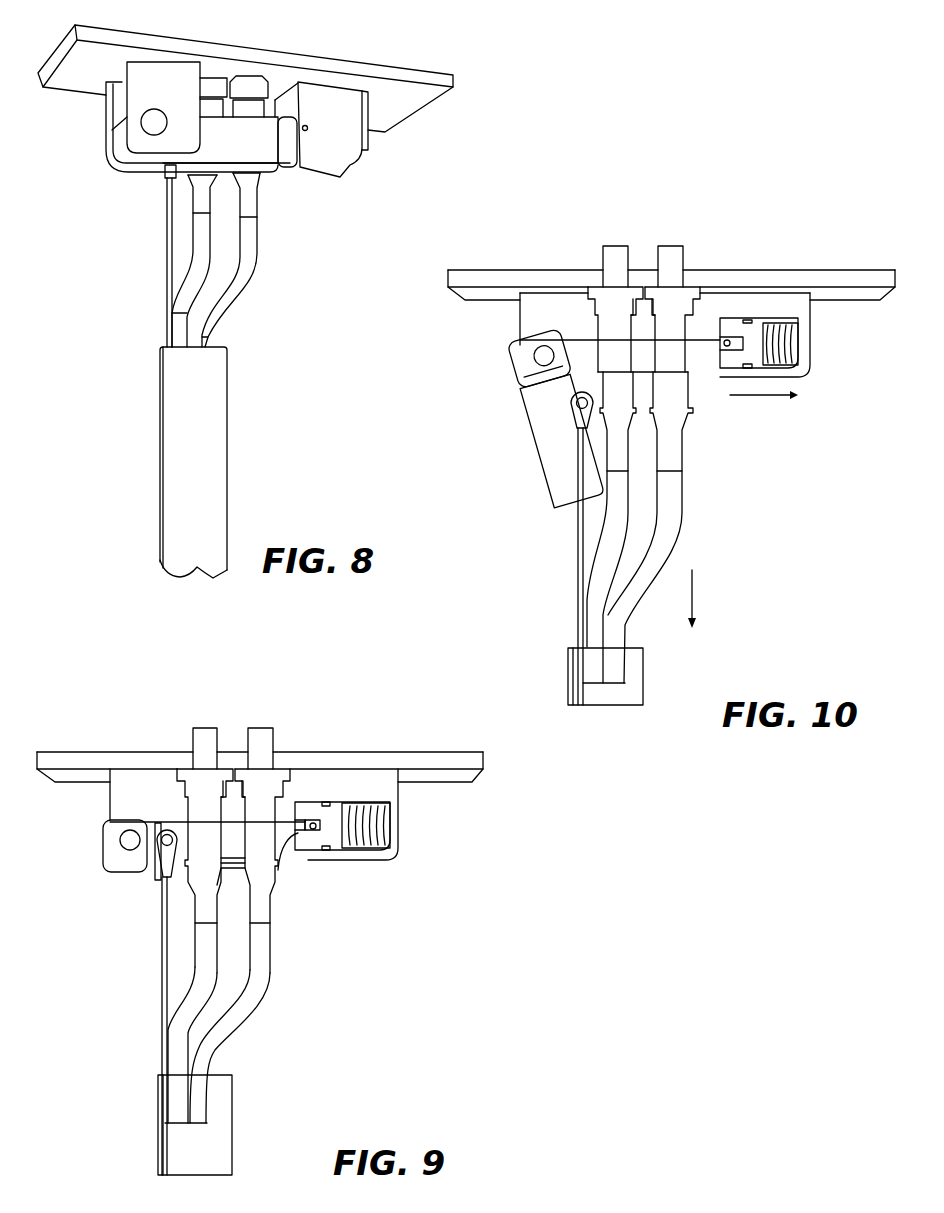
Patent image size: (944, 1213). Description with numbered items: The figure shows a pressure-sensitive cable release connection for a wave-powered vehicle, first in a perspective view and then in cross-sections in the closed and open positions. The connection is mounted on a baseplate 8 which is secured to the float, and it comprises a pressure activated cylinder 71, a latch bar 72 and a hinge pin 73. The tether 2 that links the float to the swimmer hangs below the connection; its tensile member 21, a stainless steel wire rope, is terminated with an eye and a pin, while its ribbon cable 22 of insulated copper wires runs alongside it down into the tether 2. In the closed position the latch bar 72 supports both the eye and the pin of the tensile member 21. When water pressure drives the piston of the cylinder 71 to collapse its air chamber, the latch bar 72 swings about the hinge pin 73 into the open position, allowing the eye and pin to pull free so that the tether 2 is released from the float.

In FIG. 8, the tether 2 is at (232, 444).
In FIG. 9, the tether 2 is at (233, 1130).
In FIG. 10, the tether 2 is at (647, 662).
In FIG. 8, the baseplate 8 is at (462, 78).
In FIG. 8, the tensile member 21 is at (158, 242).
In FIG. 9, the tensile member 21 is at (160, 957).
In FIG. 10, the tensile member 21 is at (578, 512).
In FIG. 8, the ribbon cable 22 is at (262, 268).
In FIG. 9, the ribbon cable 22 is at (254, 1001).
In FIG. 10, the ribbon cable 22 is at (683, 508).
In FIG. 8, the pressure activated cylinder 71 is at (375, 142).
In FIG. 9, the pressure activated cylinder 71 is at (344, 866).
In FIG. 10, the pressure activated cylinder 71 is at (759, 343).
In FIG. 8, the latch bar 72 is at (272, 178).
In FIG. 8, the hinge pin 73 is at (100, 133).
In FIG. 9, the hinge pin 73 is at (132, 850).
In FIG. 10, the hinge pin 73 is at (556, 418).